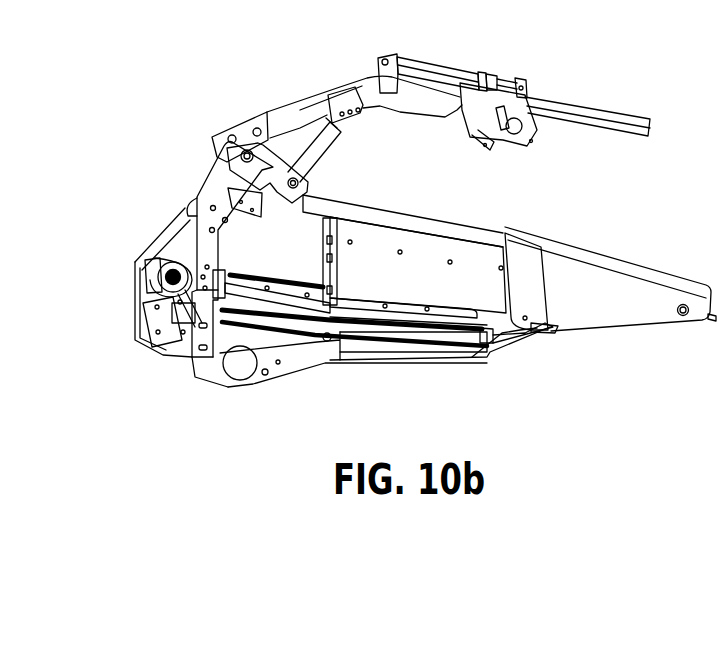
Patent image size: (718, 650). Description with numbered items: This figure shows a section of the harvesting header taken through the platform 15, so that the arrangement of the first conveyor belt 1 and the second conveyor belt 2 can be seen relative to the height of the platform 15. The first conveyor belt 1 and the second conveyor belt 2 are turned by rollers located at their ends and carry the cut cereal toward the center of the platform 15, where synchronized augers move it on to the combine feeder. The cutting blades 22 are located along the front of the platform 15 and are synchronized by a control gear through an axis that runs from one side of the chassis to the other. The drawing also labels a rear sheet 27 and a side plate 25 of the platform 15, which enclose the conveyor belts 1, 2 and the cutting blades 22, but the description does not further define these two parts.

The platform 15 is at (207, 186).
The back sheet 27 is at (405, 256).
The cutting blades 22 is at (548, 330).
The side plate 25 is at (605, 304).
The first conveyor belt 1 is at (262, 320).
The second conveyor belt 2 is at (408, 340).